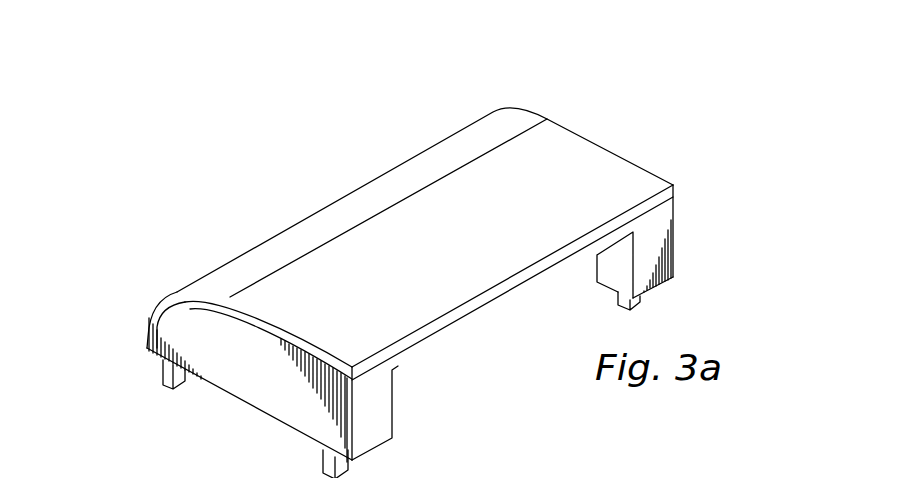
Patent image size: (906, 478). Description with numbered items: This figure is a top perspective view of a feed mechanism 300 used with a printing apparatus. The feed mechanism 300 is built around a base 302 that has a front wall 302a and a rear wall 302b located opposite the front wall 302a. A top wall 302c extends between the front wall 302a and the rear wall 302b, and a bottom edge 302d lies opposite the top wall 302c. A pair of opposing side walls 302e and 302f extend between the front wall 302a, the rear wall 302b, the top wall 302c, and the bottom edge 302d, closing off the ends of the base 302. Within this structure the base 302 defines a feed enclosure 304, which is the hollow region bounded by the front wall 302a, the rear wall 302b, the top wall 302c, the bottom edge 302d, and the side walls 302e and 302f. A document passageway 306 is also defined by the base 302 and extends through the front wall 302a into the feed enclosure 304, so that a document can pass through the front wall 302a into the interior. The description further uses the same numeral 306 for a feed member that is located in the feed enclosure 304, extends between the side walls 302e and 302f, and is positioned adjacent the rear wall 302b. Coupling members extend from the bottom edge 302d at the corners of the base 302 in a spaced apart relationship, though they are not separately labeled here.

The feed mechanism 300 is at (607, 94).
The base 302 is at (335, 203).
The front wall 302a is at (372, 438).
The rear wall 302b is at (158, 301).
The top wall 302c is at (465, 260).
The bottom edge 302d is at (287, 426).
The side wall 302e is at (240, 388).
The side wall 302f is at (675, 232).
The feed enclosure 304 is at (485, 353).
The document passageway 306 is at (618, 278).